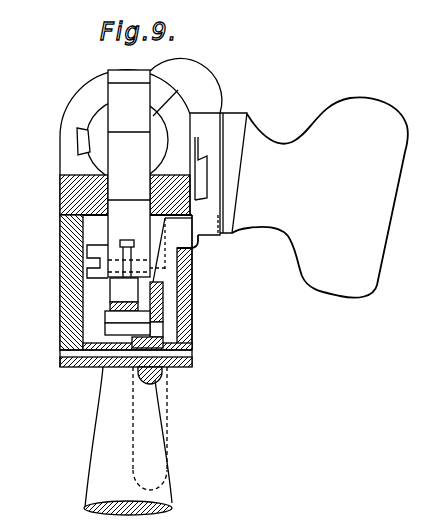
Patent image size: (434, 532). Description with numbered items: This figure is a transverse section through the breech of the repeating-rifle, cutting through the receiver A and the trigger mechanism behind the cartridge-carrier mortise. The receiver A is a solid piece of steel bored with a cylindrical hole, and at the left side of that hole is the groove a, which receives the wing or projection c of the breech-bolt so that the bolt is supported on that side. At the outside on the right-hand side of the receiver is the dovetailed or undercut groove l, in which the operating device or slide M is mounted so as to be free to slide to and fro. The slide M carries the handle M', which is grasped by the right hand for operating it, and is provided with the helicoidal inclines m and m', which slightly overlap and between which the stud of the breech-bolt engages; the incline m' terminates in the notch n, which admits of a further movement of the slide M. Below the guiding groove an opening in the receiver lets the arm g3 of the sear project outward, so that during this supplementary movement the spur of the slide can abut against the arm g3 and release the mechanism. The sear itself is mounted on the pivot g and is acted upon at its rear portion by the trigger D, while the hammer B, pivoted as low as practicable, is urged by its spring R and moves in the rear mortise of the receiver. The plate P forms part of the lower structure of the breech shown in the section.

The receiver A is at (67, 189).
The hammer B is at (118, 174).
The groove a is at (83, 141).
The operating device or slide M is at (205, 180).
The handle M' is at (314, 197).
The helicoidal incline m' is at (186, 87).
The helicoidal incline m is at (210, 222).
The dovetailed or undercut groove l is at (201, 168).
The arm g3 is at (203, 250).
The pivot g is at (105, 318).
The wing or projection c is at (171, 277).
The spring R is at (124, 294).
The base plate P is at (134, 341).
The trigger D is at (118, 389).
The notch n is at (132, 469).